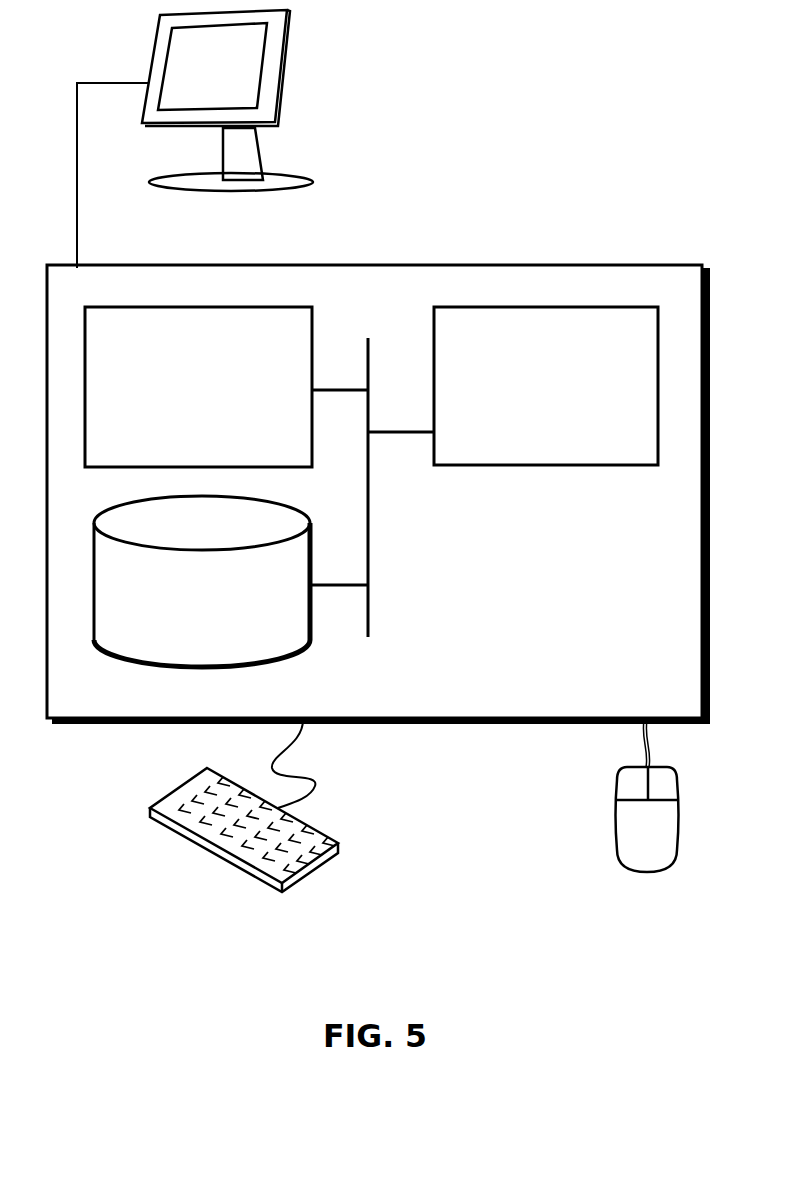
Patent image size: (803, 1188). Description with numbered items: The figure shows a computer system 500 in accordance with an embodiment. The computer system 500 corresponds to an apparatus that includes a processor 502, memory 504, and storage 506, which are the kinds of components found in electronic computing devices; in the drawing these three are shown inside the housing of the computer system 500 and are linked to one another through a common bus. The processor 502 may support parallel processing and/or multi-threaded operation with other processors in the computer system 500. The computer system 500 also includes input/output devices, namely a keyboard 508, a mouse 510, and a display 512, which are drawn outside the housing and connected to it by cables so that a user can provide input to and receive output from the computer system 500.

The computer system 500 is at (422, 243).
The processor 502 is at (527, 399).
The memory 504 is at (177, 397).
The storage 506 is at (184, 609).
The keyboard 508 is at (170, 830).
The mouse 510 is at (626, 841).
The display 512 is at (195, 139).